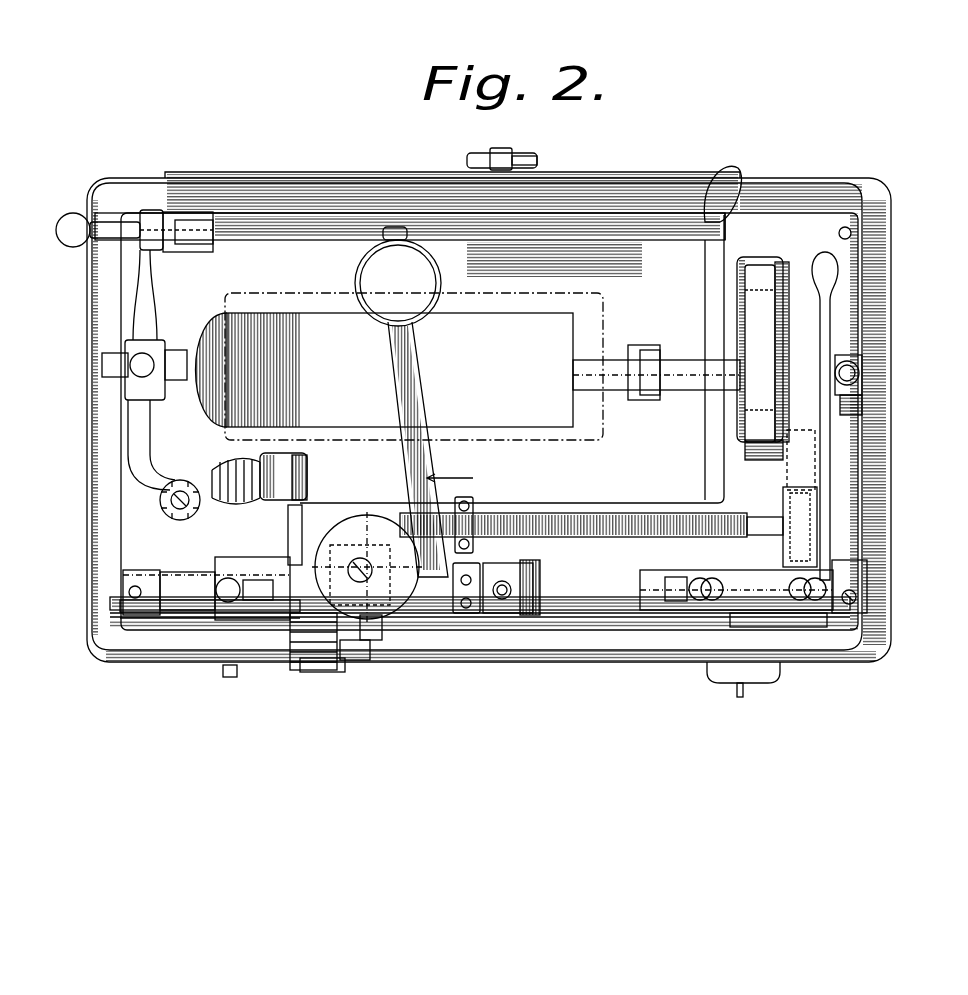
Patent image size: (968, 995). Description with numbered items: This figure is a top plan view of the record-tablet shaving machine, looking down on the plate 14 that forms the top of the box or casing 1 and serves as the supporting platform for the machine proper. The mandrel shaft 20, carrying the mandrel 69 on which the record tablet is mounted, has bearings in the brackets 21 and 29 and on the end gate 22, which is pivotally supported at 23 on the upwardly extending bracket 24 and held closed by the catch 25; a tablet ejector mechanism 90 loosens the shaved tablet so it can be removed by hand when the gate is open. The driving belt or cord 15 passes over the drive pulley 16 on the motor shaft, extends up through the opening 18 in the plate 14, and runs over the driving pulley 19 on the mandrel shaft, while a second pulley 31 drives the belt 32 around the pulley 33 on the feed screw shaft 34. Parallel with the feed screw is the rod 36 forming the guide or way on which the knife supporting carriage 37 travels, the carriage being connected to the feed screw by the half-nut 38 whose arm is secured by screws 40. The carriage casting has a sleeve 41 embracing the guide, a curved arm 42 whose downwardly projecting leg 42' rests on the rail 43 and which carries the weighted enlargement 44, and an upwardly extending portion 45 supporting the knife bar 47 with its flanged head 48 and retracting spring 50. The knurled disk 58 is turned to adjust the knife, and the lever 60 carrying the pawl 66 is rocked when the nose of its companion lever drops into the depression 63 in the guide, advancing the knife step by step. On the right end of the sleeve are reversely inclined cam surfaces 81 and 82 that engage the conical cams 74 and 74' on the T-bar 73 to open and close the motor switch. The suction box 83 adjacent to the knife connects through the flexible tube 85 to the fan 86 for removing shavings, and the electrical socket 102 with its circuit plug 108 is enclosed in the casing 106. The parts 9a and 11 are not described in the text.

The box or casing 1 is at (885, 655).
The plate 14 is at (852, 252).
The rail 43 is at (536, 232).
The pin 9a is at (503, 150).
The screw 11 is at (537, 160).
The tablet ejector mechanism 90 is at (703, 268).
The catch 25 is at (150, 222).
The end gate 22 is at (126, 410).
The mandrel shaft 20 is at (172, 385).
The bracket 29 is at (648, 348).
The mandrel 69 is at (556, 428).
The enlargement 44 is at (398, 283).
The downwardly projecting leg 42' is at (408, 185).
The curved arm 42 is at (425, 449).
The opening 18 is at (746, 262).
The drive pulley 16 is at (786, 262).
The driving belt or cord 15 is at (765, 440).
The driving pulley 19 is at (820, 302).
The second pulley 31 is at (860, 362).
The bracket 21 is at (863, 372).
The belt 32 is at (792, 470).
The pulley 33 is at (820, 520).
The feed screw shaft 34 is at (622, 514).
The half-nut 38 is at (476, 504).
The pivot 23 is at (183, 516).
The flexible tube 85 is at (214, 470).
The suction box 83 is at (310, 462).
The fan 86 is at (300, 452).
The casting portion 45 is at (287, 525).
The sleeve 41 is at (250, 560).
The disk 58 is at (367, 567).
The pawl 66 is at (365, 580).
The knife supporting carriage 37 is at (293, 606).
The bar 47 is at (300, 665).
The flanged head 48 is at (325, 672).
The spring 50 is at (348, 660).
The lever 60 is at (372, 641).
The screws 40 is at (470, 614).
The annular cam surface 82 is at (527, 556).
The annular cam surface 81 is at (538, 578).
The rod 36 is at (592, 598).
The depression 63 is at (678, 577).
The conical cam surface 74' is at (717, 573).
The T-bar 73 is at (745, 585).
The socket 102 is at (710, 668).
The circuit plug 108 is at (747, 704).
The conical cam surface 74 is at (778, 659).
The casing 106 is at (228, 678).
The bracket 24 is at (125, 617).